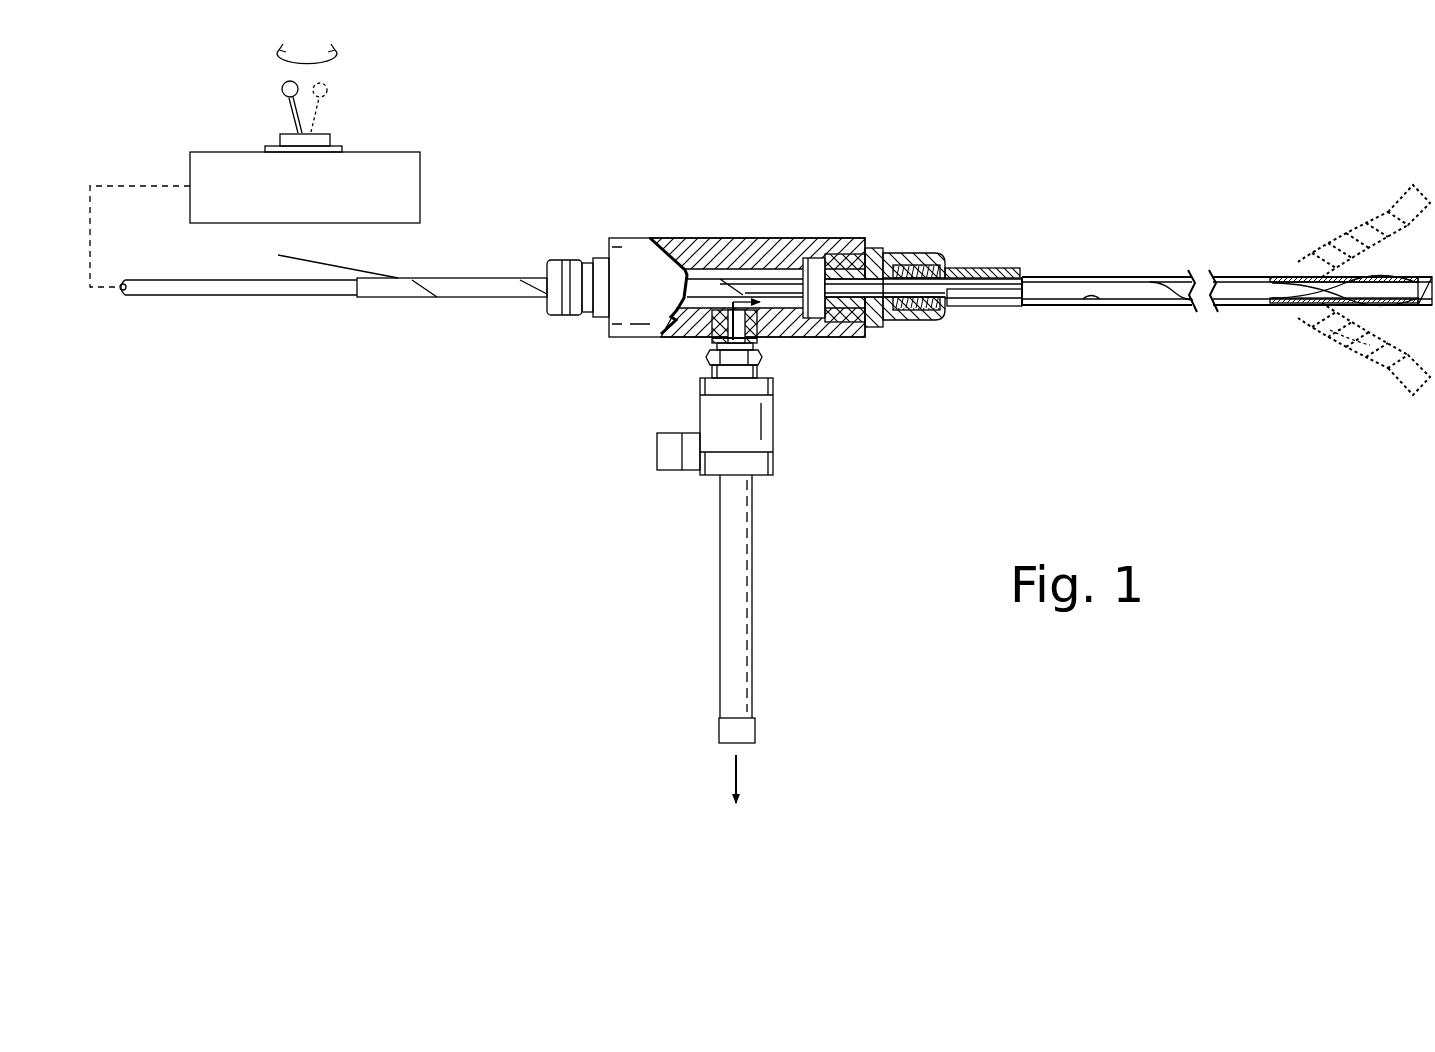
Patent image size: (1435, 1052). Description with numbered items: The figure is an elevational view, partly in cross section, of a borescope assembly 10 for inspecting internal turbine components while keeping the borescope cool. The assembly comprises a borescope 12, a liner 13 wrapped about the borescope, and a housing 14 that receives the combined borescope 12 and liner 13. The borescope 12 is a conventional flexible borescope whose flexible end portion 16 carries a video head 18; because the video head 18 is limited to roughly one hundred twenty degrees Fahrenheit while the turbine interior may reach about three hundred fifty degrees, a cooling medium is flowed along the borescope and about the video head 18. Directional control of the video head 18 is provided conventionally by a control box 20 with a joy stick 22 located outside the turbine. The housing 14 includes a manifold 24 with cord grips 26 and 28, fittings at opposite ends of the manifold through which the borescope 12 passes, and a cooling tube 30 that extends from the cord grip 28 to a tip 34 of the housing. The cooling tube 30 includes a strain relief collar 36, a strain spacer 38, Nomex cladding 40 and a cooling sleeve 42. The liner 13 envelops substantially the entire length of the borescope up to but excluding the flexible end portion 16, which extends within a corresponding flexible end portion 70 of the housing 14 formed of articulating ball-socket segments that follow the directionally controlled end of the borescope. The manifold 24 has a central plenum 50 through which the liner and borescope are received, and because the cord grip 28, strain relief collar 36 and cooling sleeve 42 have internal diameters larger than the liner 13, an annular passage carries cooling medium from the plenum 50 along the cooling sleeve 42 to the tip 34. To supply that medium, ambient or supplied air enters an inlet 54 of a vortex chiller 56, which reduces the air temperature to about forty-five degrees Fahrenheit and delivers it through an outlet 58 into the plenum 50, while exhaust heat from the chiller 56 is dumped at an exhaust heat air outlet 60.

The borescope assembly 10 is at (709, 160).
The borescope 12 is at (209, 290).
The liner 13 is at (465, 292).
The housing 14 is at (858, 236).
The flexible end portion 16 is at (1337, 292).
The video head 18 is at (1421, 300).
The control box 20 is at (420, 193).
The joy stick 22 is at (290, 110).
The manifold 24 is at (692, 252).
The cord grip 26 is at (568, 260).
The cord grip 28 is at (878, 327).
The cooling tube 30 is at (1113, 272).
The tip 34 is at (1428, 277).
The strain relief collar 36 is at (885, 313).
The strain spacer 38 is at (945, 268).
The Nomex cladding 40 is at (1058, 273).
The cooling sleeve 42 is at (1100, 306).
The central plenum 50 is at (755, 270).
The inlet 54 is at (663, 453).
The vortex chiller 56 is at (774, 432).
The outlet 58 is at (756, 334).
The exhaust heat air outlet 60 is at (729, 708).
The flexible end portion 70 is at (1356, 347).